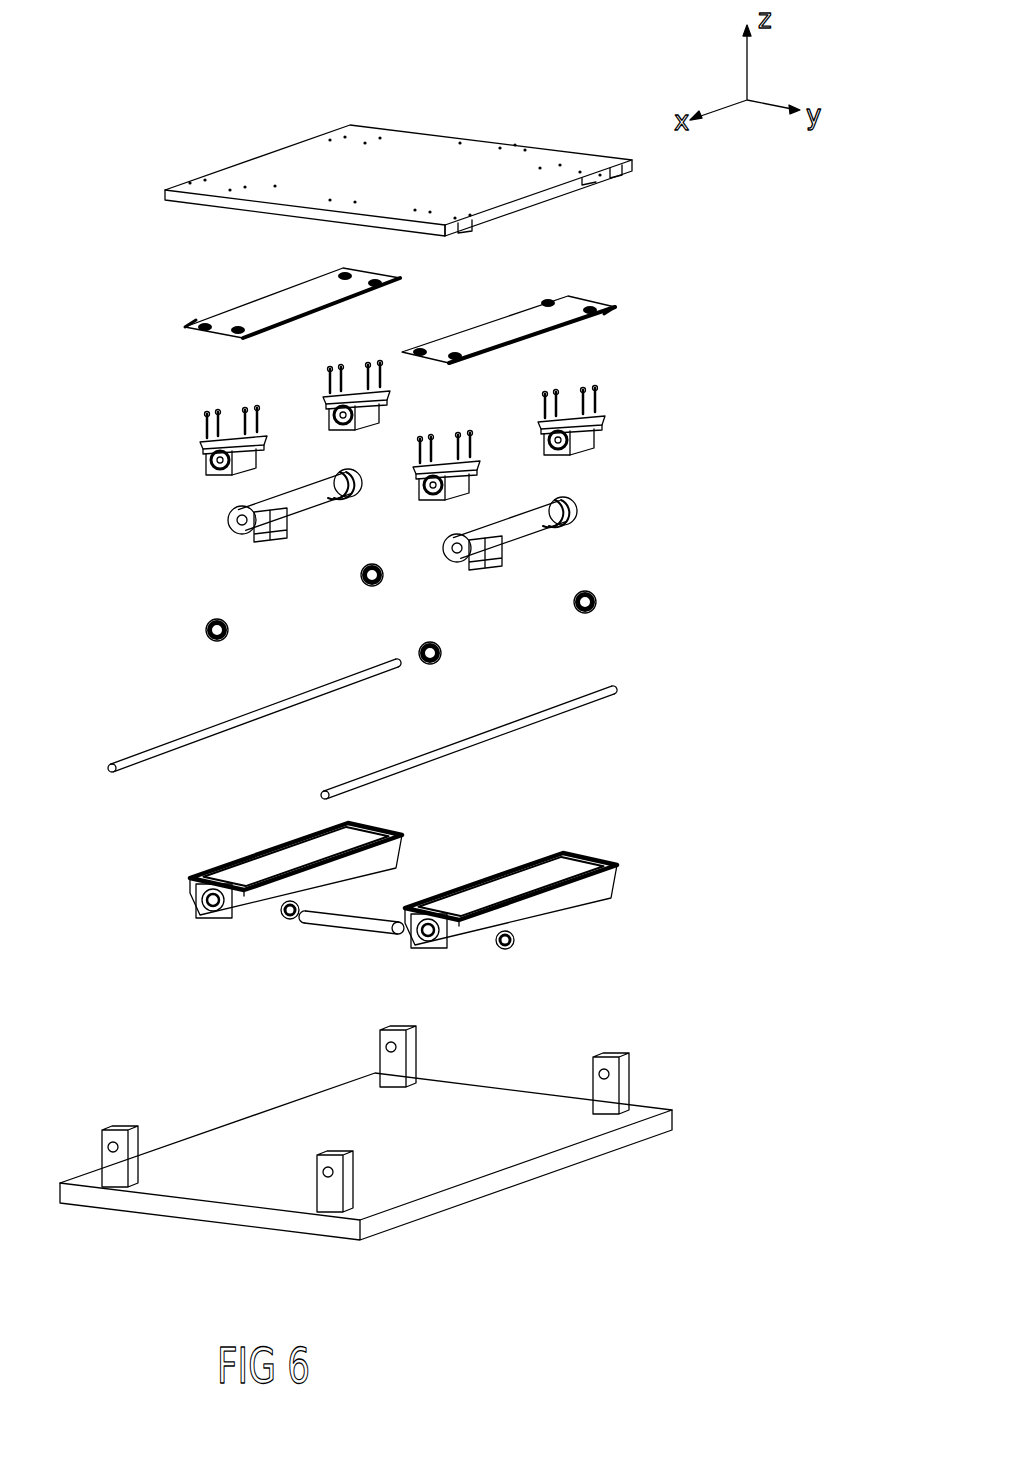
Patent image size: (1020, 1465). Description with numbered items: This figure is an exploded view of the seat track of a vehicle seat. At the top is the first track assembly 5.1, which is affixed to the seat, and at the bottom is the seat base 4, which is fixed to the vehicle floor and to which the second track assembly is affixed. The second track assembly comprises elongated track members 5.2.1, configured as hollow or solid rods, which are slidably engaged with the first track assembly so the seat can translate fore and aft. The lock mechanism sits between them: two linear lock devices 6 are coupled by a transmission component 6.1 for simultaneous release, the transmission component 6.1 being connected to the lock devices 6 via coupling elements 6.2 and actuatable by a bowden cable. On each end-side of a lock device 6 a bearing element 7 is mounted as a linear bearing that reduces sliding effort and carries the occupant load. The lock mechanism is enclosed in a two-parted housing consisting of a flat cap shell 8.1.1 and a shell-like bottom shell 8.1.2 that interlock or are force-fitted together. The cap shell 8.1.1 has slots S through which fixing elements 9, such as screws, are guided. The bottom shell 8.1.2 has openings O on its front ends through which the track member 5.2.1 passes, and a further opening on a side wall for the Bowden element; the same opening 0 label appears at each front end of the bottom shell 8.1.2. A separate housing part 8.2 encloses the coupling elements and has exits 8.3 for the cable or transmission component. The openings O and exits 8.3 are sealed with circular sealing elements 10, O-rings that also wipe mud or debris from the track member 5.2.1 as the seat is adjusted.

The seat base 4 is at (526, 1173).
The first track assembly 5.1 is at (290, 162).
The elongated track member 5.2.1 is at (242, 722).
The linear lock device 6 is at (310, 503).
The transmission component 6.1 is at (378, 923).
The coupling element 6.2 is at (252, 540).
The bearing element 7 is at (200, 456).
The cap shell 8.1.1 is at (287, 298).
The bottom shell 8.1.2 is at (384, 850).
The housing part 8.2 is at (271, 922).
The exit 8.3 is at (292, 921).
The fixing element 9 is at (205, 413).
The sealing element 10 is at (207, 630).
The opening O is at (281, 947).
The opening 0 is at (204, 905).
The slot S is at (190, 327).